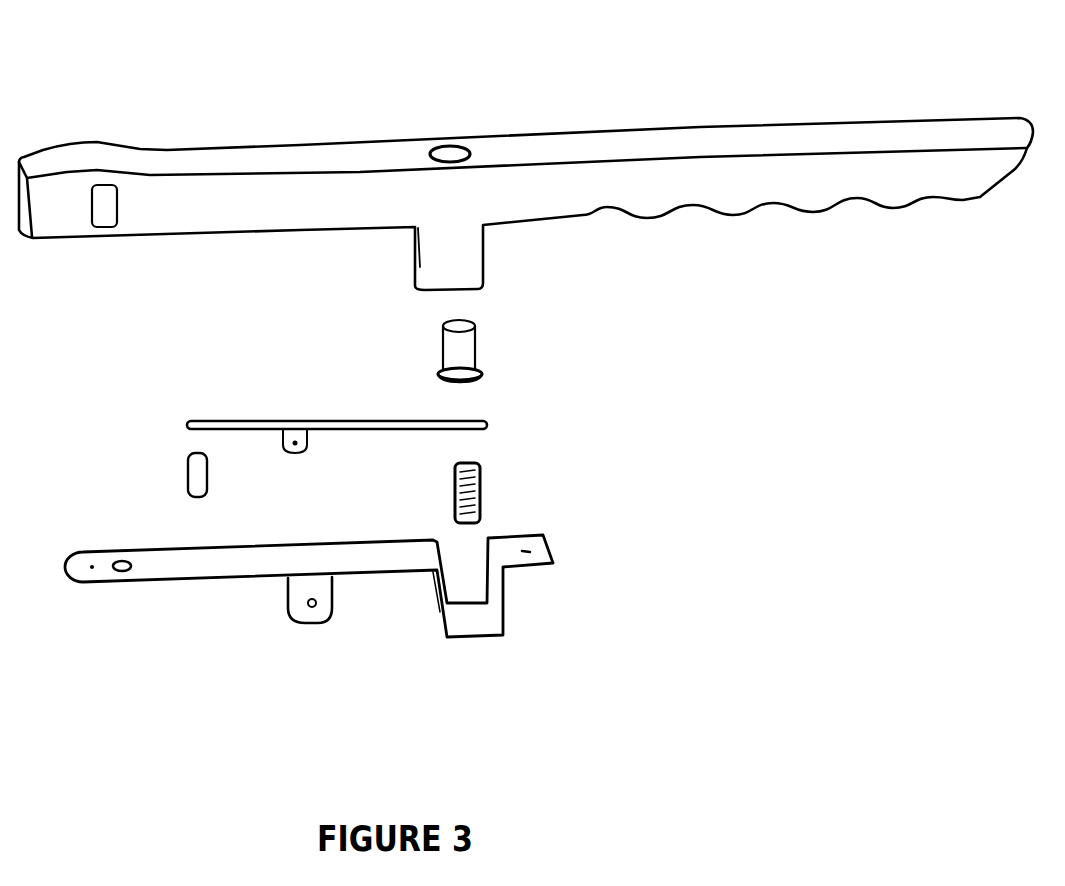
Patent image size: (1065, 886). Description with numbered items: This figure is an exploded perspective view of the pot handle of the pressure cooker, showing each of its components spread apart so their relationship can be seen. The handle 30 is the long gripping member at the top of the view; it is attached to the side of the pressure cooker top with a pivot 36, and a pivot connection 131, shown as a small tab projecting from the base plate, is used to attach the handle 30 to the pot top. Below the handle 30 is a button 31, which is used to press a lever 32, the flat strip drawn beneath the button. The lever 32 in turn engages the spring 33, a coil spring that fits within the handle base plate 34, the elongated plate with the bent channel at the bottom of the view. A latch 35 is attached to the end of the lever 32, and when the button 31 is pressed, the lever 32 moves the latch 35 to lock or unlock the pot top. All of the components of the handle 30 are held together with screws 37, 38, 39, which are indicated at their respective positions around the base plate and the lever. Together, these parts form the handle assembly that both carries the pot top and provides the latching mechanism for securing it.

The handle 30 is at (333, 157).
The button 31 is at (478, 350).
The lever 32 is at (485, 422).
The spring 33 is at (482, 477).
The handle base plate 34 is at (440, 610).
The latch 35 is at (188, 463).
The pivot 36 is at (203, 93).
The screw 37 is at (526, 641).
The screw 38 is at (92, 658).
The screw 39 is at (192, 378).
The pivot connection 131 is at (296, 622).